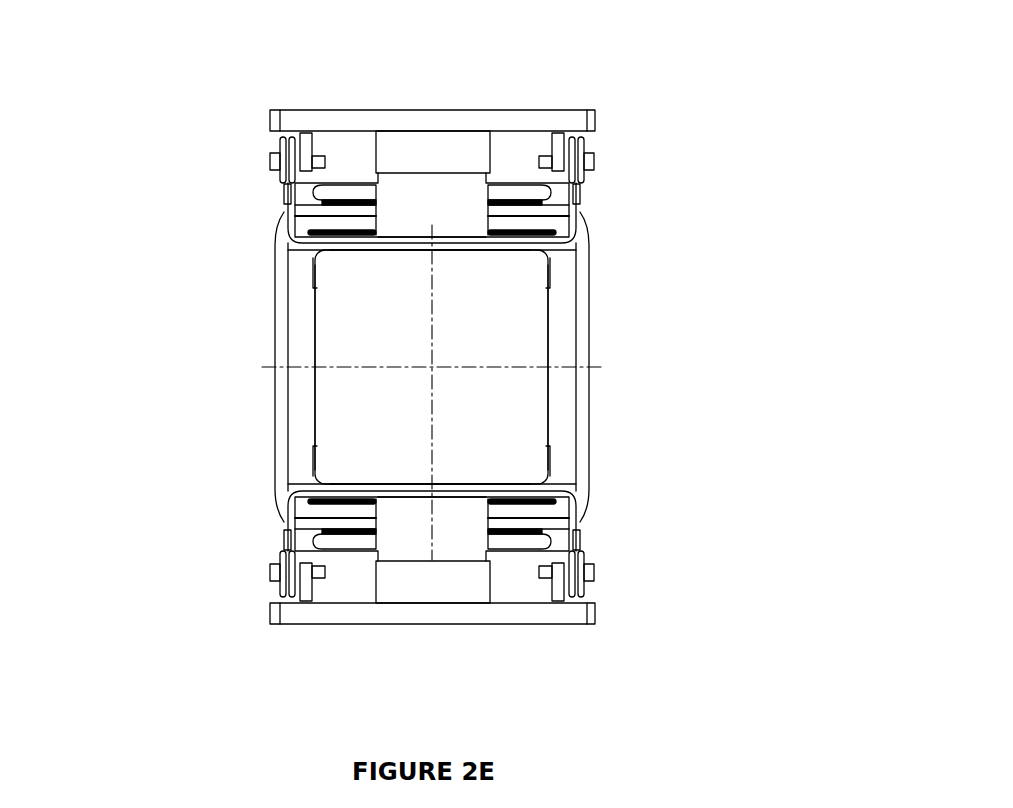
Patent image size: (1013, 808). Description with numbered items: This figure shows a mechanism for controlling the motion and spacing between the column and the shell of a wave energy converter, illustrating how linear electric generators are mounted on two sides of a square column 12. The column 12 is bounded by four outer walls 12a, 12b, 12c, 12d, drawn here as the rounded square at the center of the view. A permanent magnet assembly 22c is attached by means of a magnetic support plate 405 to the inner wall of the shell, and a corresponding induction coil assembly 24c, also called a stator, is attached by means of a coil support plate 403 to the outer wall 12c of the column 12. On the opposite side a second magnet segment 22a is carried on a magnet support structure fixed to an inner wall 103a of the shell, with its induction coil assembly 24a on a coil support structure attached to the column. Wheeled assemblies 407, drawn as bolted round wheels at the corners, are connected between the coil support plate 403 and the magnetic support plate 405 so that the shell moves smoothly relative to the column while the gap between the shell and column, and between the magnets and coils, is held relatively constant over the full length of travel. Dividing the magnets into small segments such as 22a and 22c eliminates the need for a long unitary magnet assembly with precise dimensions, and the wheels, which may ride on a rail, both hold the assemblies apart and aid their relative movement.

The magnetic support plate 405 is at (273, 112).
The wheeled assembly 407 is at (280, 157).
The coil support plate 403 is at (287, 240).
The induction coil assembly 24c is at (400, 225).
The permanent magnet assembly 22c is at (440, 150).
The column 12 is at (432, 367).
The outer wall of column 12a is at (412, 480).
The outer wall of column 12b is at (317, 413).
The outer wall of column 12c is at (450, 252).
The outer wall of column 12d is at (548, 350).
The induction coil assembly 24a is at (397, 540).
The magnet segment 22a is at (422, 582).
The inner wall of shell 103a is at (495, 613).